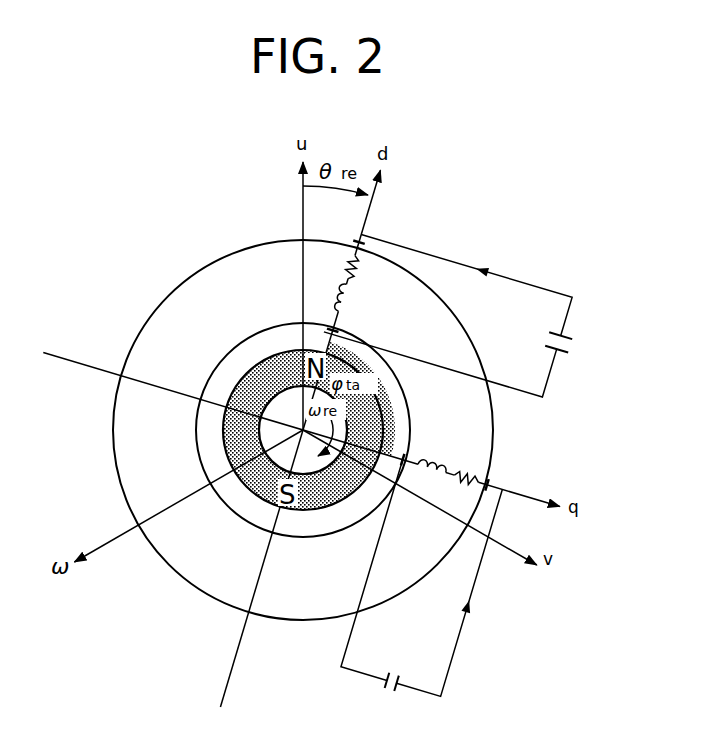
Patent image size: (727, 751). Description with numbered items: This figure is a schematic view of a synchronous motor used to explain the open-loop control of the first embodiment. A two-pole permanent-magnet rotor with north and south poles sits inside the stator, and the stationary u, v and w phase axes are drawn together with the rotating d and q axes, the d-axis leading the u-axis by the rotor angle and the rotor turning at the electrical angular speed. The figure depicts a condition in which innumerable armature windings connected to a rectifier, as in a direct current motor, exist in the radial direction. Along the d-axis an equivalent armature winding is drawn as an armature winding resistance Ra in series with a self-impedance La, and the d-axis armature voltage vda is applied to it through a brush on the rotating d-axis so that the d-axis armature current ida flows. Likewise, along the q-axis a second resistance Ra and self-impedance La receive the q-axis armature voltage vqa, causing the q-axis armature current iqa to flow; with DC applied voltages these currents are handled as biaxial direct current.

The armature winding resistance Ra is at (414, 370).
The self-impedance La is at (393, 378).
The d-axis armature voltage vda is at (468, 316).
The d-axis armature current ida is at (476, 259).
The q-axis armature voltage vqa is at (421, 582).
The q-axis armature current iqa is at (485, 601).